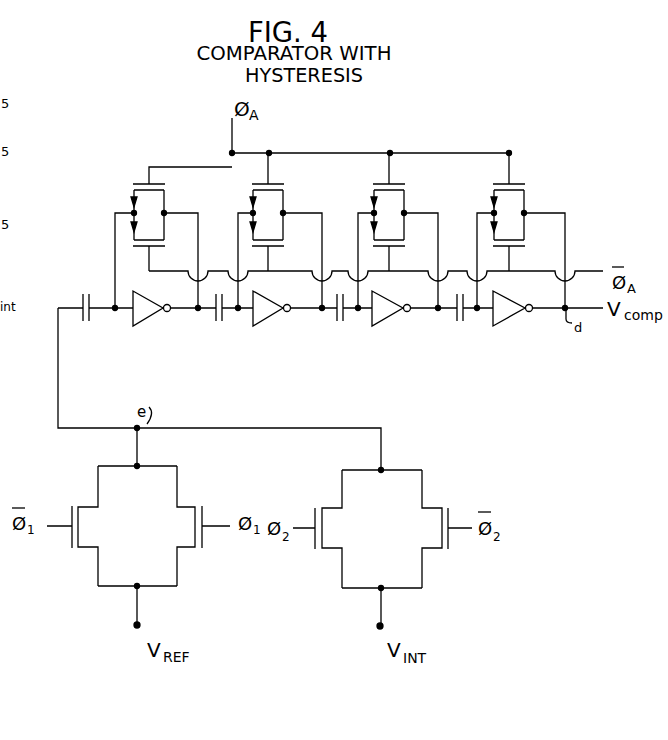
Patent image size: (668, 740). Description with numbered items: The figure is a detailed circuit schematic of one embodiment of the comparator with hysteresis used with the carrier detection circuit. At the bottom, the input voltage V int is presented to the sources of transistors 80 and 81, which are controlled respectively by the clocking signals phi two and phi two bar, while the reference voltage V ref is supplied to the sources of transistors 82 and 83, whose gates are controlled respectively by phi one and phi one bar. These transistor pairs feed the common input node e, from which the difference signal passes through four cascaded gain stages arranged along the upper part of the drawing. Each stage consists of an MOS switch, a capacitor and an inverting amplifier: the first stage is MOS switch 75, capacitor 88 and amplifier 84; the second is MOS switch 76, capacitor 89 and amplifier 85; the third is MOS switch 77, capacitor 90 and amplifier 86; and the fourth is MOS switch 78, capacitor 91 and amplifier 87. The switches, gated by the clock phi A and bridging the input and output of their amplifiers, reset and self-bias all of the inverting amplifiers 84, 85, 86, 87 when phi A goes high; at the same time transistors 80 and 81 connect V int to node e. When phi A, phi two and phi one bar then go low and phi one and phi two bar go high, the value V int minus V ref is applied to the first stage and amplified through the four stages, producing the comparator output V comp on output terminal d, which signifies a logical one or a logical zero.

The MOS switch 75 is at (141, 171).
The MOS switch 76 is at (283, 182).
The MOS switch 77 is at (408, 182).
The MOS switch 78 is at (499, 180).
The transistor 80 is at (466, 562).
The transistor 81 is at (316, 555).
The transistor 82 is at (231, 564).
The transistor 83 is at (77, 553).
The inverting amplifier 84 is at (159, 316).
The inverting amplifier 85 is at (280, 317).
The inverting amplifier 86 is at (400, 317).
The inverting amplifier 87 is at (521, 317).
The capacitor 88 is at (92, 322).
The capacitor 89 is at (224, 322).
The capacitor 90 is at (345, 322).
The capacitor 91 is at (465, 322).